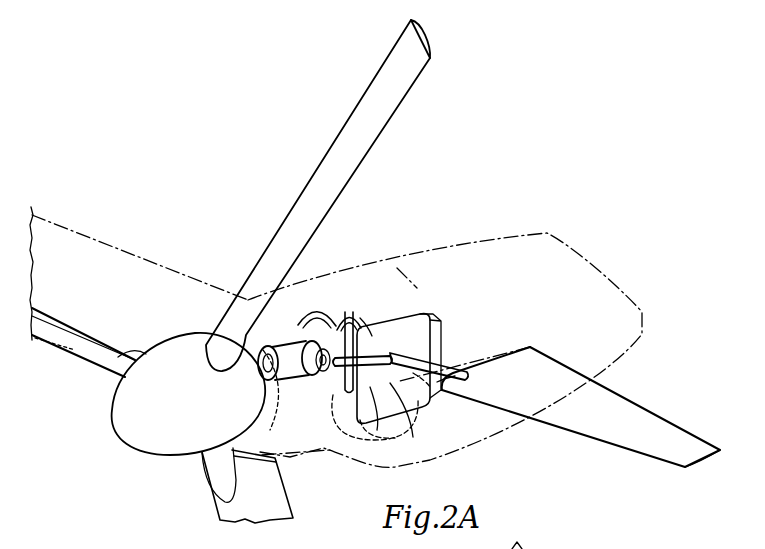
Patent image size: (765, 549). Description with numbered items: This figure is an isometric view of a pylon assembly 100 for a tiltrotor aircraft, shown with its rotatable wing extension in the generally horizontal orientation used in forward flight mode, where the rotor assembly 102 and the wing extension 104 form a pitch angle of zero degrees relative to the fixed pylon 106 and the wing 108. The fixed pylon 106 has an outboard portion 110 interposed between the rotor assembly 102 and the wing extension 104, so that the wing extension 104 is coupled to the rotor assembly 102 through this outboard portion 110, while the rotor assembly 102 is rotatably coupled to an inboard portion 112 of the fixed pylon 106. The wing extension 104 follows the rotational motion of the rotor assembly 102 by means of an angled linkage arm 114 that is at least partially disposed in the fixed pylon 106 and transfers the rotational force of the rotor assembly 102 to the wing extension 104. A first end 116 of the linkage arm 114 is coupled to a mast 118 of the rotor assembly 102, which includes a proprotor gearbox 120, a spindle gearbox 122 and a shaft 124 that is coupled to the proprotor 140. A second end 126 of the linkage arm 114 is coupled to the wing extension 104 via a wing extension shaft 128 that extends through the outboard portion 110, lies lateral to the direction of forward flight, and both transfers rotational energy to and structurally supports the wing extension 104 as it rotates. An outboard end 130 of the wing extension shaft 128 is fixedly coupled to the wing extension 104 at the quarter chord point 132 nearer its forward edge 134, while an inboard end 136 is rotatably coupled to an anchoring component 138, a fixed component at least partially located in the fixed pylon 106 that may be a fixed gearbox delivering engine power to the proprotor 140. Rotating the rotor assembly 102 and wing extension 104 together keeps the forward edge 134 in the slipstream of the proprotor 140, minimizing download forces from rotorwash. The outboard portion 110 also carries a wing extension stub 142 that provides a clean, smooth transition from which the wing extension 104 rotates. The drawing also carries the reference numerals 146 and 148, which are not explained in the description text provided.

The pylon assembly 100 is at (465, 213).
The rotor assembly 102 is at (187, 336).
The wing extension 104 is at (607, 435).
The fixed pylon 106 is at (597, 277).
The wing 108 is at (77, 352).
The outboard portion 110 is at (357, 462).
The inboard portion 112 is at (403, 257).
The linkage arm 114 is at (392, 352).
The first end 116 is at (358, 326).
The mast 118 is at (276, 340).
The proprotor gearbox 120 is at (290, 385).
The spindle gearbox 122 is at (350, 305).
The shaft 124 is at (265, 370).
The second end 126 is at (437, 320).
The wing extension shaft 128 is at (440, 372).
The outboard end 130 is at (437, 382).
The quarter chord point 132 is at (458, 376).
The forward edge 134 is at (553, 428).
The inboard end 136 is at (428, 362).
The anchoring component 138 is at (400, 412).
The proprotor 140 is at (127, 427).
The wing extension stub 142 is at (530, 346).
The ring 146 is at (309, 322).
The lower housing 148 is at (350, 410).